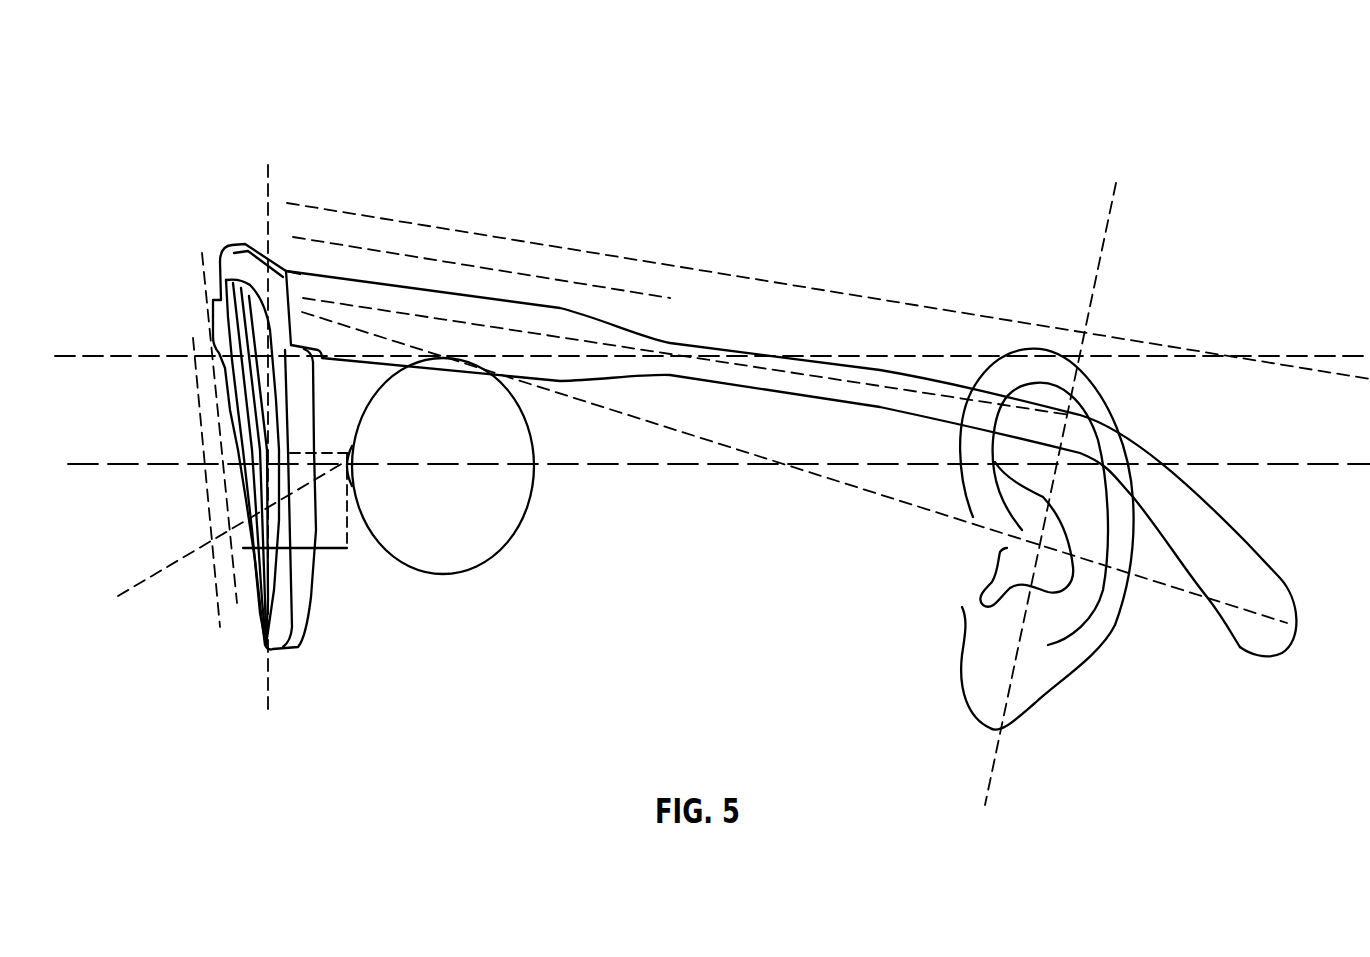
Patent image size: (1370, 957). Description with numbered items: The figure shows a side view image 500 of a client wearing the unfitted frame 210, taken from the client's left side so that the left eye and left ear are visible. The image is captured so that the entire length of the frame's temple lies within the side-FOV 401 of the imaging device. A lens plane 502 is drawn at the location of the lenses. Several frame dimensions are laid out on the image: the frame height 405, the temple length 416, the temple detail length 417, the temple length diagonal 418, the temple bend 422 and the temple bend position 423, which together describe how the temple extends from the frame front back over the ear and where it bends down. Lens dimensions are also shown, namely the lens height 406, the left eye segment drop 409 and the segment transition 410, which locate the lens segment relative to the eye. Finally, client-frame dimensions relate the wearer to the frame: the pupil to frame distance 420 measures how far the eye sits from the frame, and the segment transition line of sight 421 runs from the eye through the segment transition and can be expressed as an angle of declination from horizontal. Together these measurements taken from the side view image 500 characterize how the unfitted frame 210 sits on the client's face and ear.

The side view image 500 is at (972, 134).
The lens plane 502 is at (270, 186).
The unfitted frame 210 is at (231, 247).
The side-FOV 401 is at (125, 357).
The frame height 405 is at (232, 568).
The lens height 406 is at (217, 605).
The left eye segment drop 409 is at (347, 490).
The segment transition 410 is at (305, 550).
The temple length 416 is at (742, 278).
The temple detail length 417 is at (590, 288).
The temple length diagonal 418 is at (907, 503).
The pupil to frame distance 420 is at (330, 450).
The segment transition line of sight 421 is at (178, 557).
The temple bend 422 is at (837, 463).
The temple bend position 423 is at (1093, 270).